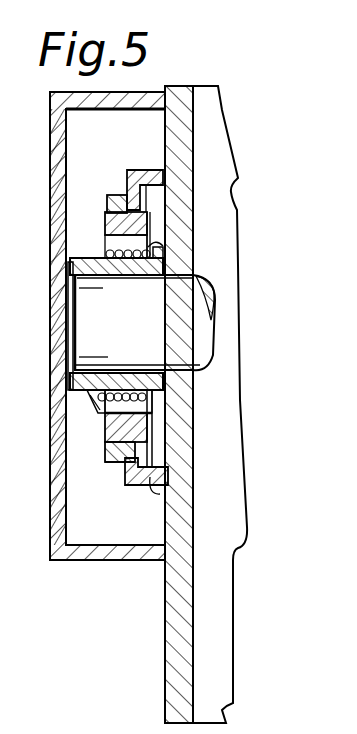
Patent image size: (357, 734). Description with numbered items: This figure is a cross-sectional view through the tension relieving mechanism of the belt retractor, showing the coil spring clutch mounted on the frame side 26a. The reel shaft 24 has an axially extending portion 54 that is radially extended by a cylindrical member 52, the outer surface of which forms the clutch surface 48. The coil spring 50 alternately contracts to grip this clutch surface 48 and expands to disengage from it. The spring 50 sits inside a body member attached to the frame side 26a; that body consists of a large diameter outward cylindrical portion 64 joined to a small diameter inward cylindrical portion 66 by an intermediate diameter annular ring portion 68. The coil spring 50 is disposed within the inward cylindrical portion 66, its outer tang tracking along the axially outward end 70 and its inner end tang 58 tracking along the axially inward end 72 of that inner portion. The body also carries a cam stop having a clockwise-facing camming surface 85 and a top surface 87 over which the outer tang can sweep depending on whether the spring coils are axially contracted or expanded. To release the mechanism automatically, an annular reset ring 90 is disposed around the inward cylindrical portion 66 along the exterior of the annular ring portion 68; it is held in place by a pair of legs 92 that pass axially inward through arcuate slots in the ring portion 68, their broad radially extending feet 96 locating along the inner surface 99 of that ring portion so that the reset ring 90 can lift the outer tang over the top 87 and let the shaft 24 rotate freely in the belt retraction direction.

The reel shaft 24 is at (183, 335).
The frame side 26a is at (172, 631).
The clutch surface 48 is at (105, 219).
The coil spring 50 is at (194, 256).
The cylindrical member 52 is at (72, 268).
The axially extending portion 54 is at (93, 335).
The inner end tang 58 is at (153, 438).
The outward cylindrical portion 64 is at (166, 187).
The inward cylindrical portion 66 is at (148, 224).
The annular ring portion 68 is at (127, 181).
The axially outward end 70 is at (107, 212).
The axially inward end 72 is at (168, 238).
The camming surface 85 is at (105, 425).
The top surface 87 is at (88, 396).
The reset ring 90 is at (117, 463).
The legs 92 is at (105, 448).
The feet 96 is at (160, 494).
The inner surface 99 is at (135, 483).